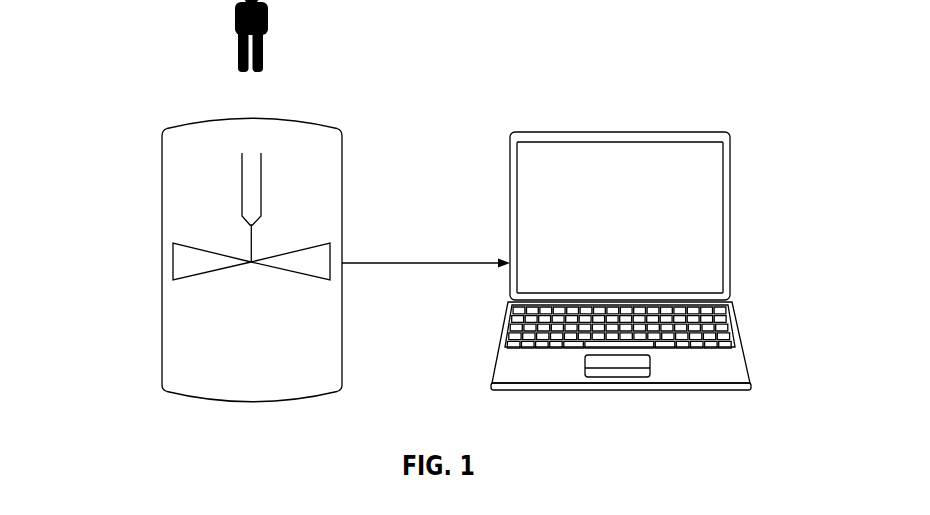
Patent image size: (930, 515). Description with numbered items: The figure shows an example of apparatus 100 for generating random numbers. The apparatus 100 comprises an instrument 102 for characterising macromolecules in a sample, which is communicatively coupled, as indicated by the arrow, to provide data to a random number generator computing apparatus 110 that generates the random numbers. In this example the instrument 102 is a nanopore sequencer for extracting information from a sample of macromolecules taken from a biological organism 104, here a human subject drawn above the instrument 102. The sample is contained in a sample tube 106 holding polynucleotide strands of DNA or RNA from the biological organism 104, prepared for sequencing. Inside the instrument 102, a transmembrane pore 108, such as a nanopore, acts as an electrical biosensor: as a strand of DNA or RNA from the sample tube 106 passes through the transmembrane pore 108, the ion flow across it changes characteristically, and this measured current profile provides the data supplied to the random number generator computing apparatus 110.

The apparatus 100 is at (572, 40).
The instrument 102 is at (268, 381).
The biological organism 104 is at (267, 110).
The sample tube 106 is at (242, 207).
The transmembrane pore 108 is at (173, 255).
The random number generator computing apparatus 110 is at (688, 278).